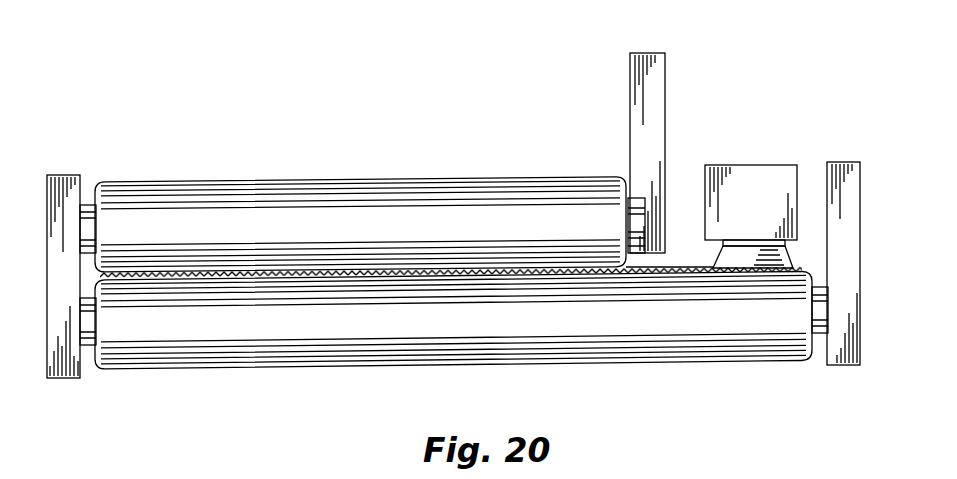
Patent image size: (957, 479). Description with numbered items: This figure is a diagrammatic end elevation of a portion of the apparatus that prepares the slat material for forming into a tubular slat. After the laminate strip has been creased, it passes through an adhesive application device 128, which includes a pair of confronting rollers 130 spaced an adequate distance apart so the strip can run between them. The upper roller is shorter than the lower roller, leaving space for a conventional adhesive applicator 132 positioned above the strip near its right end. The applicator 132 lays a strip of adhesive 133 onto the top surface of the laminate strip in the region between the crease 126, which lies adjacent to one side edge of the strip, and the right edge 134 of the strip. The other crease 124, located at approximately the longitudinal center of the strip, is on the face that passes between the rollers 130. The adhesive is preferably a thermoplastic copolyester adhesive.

The crease 124 is at (445, 273).
The crease 126 is at (713, 267).
The adhesive application device 128 is at (386, 168).
The confronting rollers 130 is at (453, 224).
The adhesive applicator 132 is at (740, 187).
The strip of adhesive 133 is at (753, 273).
The right edge 134 is at (793, 267).